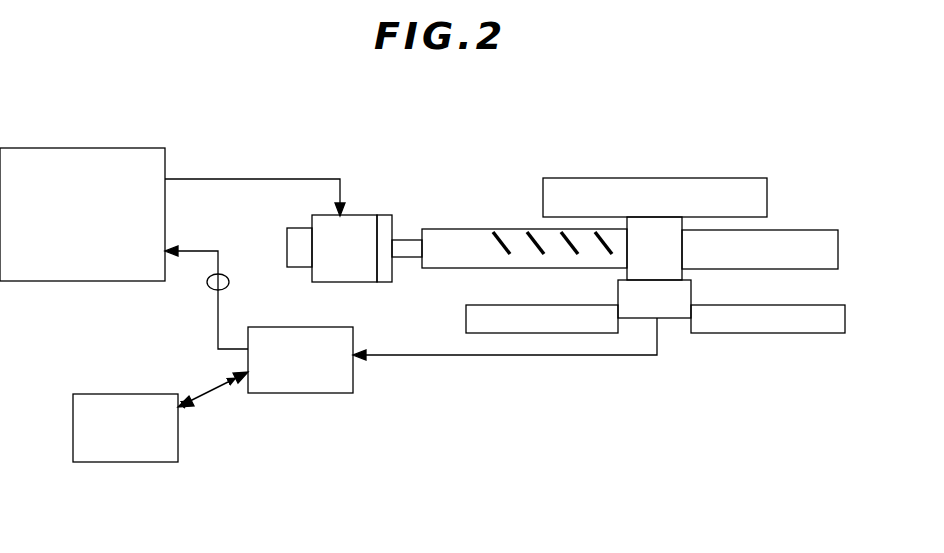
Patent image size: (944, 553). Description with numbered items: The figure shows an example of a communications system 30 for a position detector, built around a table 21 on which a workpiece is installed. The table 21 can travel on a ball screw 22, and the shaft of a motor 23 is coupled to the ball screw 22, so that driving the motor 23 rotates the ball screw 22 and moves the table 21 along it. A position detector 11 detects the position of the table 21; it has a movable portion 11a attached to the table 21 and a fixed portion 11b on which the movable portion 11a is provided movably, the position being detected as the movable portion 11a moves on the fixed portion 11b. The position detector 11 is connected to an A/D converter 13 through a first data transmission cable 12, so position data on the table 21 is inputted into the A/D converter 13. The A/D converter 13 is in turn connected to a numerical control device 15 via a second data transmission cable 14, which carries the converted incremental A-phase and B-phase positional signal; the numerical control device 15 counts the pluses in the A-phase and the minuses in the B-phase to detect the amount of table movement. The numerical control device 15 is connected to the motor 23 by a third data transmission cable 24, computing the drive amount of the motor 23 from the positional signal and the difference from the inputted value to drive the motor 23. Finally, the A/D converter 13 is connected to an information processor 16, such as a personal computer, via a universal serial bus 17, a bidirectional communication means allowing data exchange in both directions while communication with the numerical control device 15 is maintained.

The position detector 11 is at (660, 407).
The movable portion 11a is at (677, 310).
The fixed portion 11b is at (793, 320).
The first data transmission cable 12 is at (475, 358).
The A/D converter 13 is at (298, 393).
The second data transmission cable 14 is at (218, 320).
The numerical control device 15 is at (60, 148).
The information processor 16 is at (120, 462).
The universal serial bus 17 is at (215, 392).
The table 21 is at (620, 185).
The ball screw 22 is at (812, 240).
The motor 23 is at (362, 223).
The third data transmission cable 24 is at (288, 178).
The communications system 30 is at (310, 476).